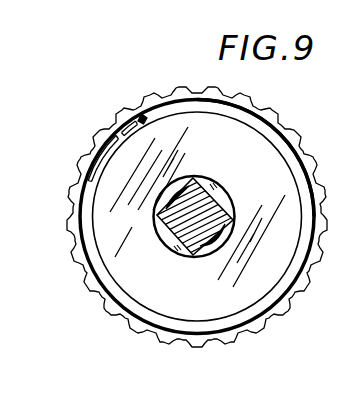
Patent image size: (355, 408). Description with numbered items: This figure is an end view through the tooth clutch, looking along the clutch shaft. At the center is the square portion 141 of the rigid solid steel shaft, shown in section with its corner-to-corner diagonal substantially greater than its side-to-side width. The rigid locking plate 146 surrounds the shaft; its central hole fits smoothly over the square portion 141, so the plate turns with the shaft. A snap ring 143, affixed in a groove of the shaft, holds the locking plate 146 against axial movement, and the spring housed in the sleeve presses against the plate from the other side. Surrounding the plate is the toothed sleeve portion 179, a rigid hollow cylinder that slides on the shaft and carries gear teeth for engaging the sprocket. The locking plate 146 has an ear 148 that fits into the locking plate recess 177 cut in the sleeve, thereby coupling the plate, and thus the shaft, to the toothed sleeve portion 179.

The square portion 141 is at (177, 216).
The snap ring 143 is at (222, 196).
The locking plate 146 is at (233, 302).
The ear 148 is at (135, 117).
The locking plate recess 177 is at (100, 150).
The toothed sleeve portion 179 is at (257, 125).